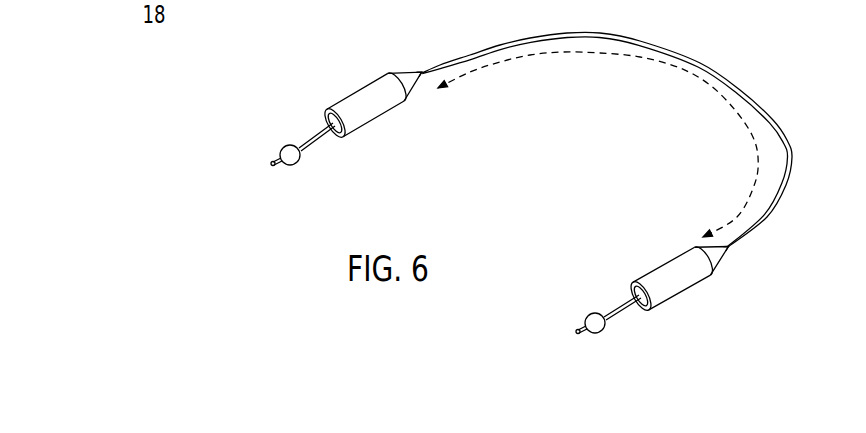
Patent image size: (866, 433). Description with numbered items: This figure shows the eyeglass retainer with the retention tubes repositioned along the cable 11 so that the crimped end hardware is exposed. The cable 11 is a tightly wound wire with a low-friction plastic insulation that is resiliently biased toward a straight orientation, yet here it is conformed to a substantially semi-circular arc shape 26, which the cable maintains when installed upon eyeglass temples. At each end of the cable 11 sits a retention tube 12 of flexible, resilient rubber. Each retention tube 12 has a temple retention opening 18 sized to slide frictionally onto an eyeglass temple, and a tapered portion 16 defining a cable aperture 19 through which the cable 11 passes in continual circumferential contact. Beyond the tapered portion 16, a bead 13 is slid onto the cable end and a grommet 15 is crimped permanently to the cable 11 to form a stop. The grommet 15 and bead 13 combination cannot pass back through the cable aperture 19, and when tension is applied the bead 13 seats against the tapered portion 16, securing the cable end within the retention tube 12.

The cable 11 is at (793, 163).
The retention tube 12 is at (539, 190).
The bead 13 is at (288, 147).
The grommet 15 is at (272, 158).
The tapered portion 16 is at (408, 77).
The temple retention opening 18 is at (336, 138).
The cable aperture 19 is at (425, 63).
The arc shape 26 is at (722, 100).